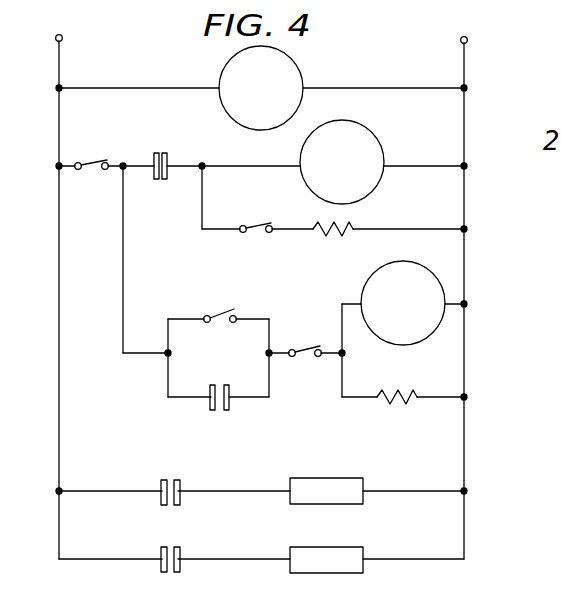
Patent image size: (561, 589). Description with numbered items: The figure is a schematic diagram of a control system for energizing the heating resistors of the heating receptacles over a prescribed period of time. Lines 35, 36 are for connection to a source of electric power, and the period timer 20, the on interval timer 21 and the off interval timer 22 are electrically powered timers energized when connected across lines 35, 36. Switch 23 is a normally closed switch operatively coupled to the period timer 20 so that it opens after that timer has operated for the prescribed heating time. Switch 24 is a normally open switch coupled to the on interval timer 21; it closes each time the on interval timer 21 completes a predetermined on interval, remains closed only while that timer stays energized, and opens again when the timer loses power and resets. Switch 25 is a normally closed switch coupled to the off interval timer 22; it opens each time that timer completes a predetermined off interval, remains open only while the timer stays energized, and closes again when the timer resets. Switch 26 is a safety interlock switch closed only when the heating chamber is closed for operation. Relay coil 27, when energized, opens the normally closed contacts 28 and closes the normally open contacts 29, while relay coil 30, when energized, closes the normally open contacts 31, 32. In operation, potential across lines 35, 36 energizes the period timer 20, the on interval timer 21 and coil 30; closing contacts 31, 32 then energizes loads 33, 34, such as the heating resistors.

The period timer 20 is at (218, 70).
The on interval timer 21 is at (378, 134).
The off interval timer 22 is at (362, 283).
The switch 23 is at (92, 161).
The switch 24 is at (224, 312).
The switch 25 is at (304, 350).
The safety interlock switch 26 is at (256, 226).
The relay coil 27 is at (392, 404).
The normally closed contacts 28 is at (168, 160).
The normally open contacts 29 is at (208, 400).
The relay coil 30 is at (330, 236).
The normally open contacts 31 is at (160, 482).
The normally open contacts 32 is at (160, 550).
The load 33 is at (328, 476).
The load 34 is at (325, 545).
The line 35 is at (57, 35).
The line 36 is at (461, 38).